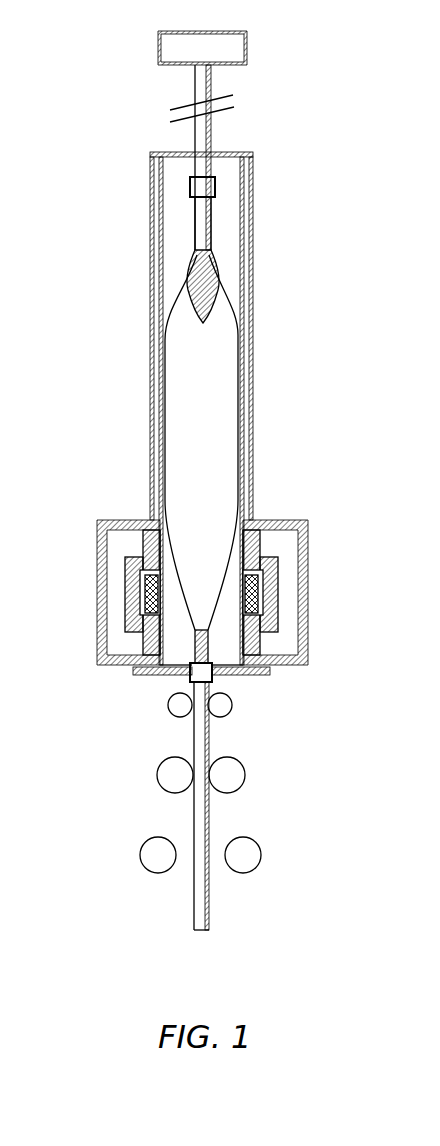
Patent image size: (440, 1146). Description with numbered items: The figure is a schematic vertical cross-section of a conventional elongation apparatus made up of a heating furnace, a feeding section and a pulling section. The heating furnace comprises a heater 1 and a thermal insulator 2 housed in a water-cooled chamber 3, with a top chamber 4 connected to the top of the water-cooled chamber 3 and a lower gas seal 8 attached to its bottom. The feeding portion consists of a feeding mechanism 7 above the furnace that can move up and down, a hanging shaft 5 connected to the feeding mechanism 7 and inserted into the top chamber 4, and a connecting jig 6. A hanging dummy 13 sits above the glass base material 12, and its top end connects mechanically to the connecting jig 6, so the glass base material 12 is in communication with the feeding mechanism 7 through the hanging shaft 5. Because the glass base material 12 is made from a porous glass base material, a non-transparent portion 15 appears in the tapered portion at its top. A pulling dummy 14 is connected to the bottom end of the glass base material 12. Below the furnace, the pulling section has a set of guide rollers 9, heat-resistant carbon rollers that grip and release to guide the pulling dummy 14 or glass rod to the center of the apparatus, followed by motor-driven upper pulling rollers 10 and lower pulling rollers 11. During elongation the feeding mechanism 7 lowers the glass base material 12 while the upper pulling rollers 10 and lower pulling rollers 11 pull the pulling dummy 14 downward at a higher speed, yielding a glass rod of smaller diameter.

The heater 1 is at (127, 605).
The thermal insulator 2 is at (128, 582).
The water-cooled chamber 3 is at (105, 527).
The top chamber 4 is at (152, 263).
The hanging shaft 5 is at (208, 132).
The connecting jig 6 is at (215, 185).
The feeding mechanism 7 is at (237, 50).
The lower gas seal 8 is at (135, 672).
The guide rollers 9 is at (172, 708).
The upper pulling rollers 10 is at (158, 787).
The lower pulling rollers 11 is at (141, 866).
The glass base material 12 is at (213, 420).
The hanging dummy 13 is at (200, 222).
The pulling dummy 14 is at (208, 740).
The non-transparent portion 15 is at (220, 278).